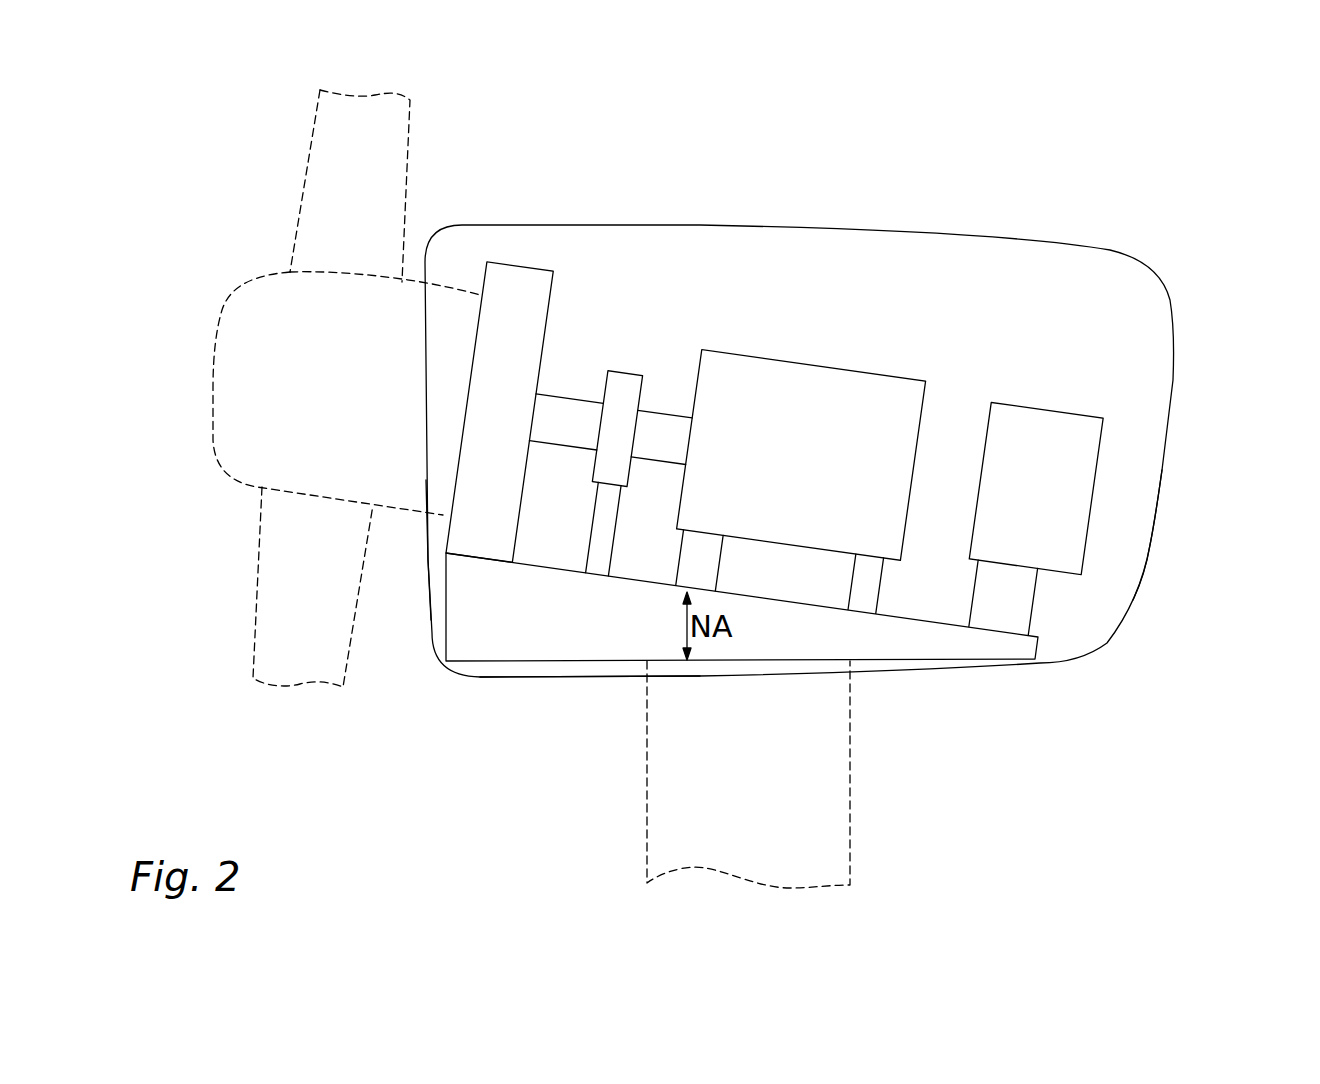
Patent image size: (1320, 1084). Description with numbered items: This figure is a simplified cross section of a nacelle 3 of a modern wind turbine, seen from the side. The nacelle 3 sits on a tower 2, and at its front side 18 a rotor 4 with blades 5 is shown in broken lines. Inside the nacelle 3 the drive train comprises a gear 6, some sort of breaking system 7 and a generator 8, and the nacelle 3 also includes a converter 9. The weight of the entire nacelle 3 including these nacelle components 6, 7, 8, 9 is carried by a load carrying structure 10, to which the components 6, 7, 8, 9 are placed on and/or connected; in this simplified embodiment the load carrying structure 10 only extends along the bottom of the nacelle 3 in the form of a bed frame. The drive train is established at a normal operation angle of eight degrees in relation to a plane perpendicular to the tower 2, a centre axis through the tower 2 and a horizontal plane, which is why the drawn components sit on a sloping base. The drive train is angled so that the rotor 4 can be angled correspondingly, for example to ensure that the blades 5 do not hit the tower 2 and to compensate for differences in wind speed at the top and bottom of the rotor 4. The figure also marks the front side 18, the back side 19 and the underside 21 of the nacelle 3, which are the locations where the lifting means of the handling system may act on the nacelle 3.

The tower 2 is at (775, 820).
The nacelle 3 is at (1205, 260).
The rotor 4 is at (268, 342).
The blades 5 is at (373, 178).
The gear 6 is at (517, 297).
The breaking system 7 is at (623, 392).
The generator 8 is at (770, 403).
The converter 9 is at (1053, 453).
The load carrying structure 10 is at (993, 648).
The front side 18 is at (427, 567).
The back side 19 is at (1147, 547).
The underside 21 is at (583, 678).